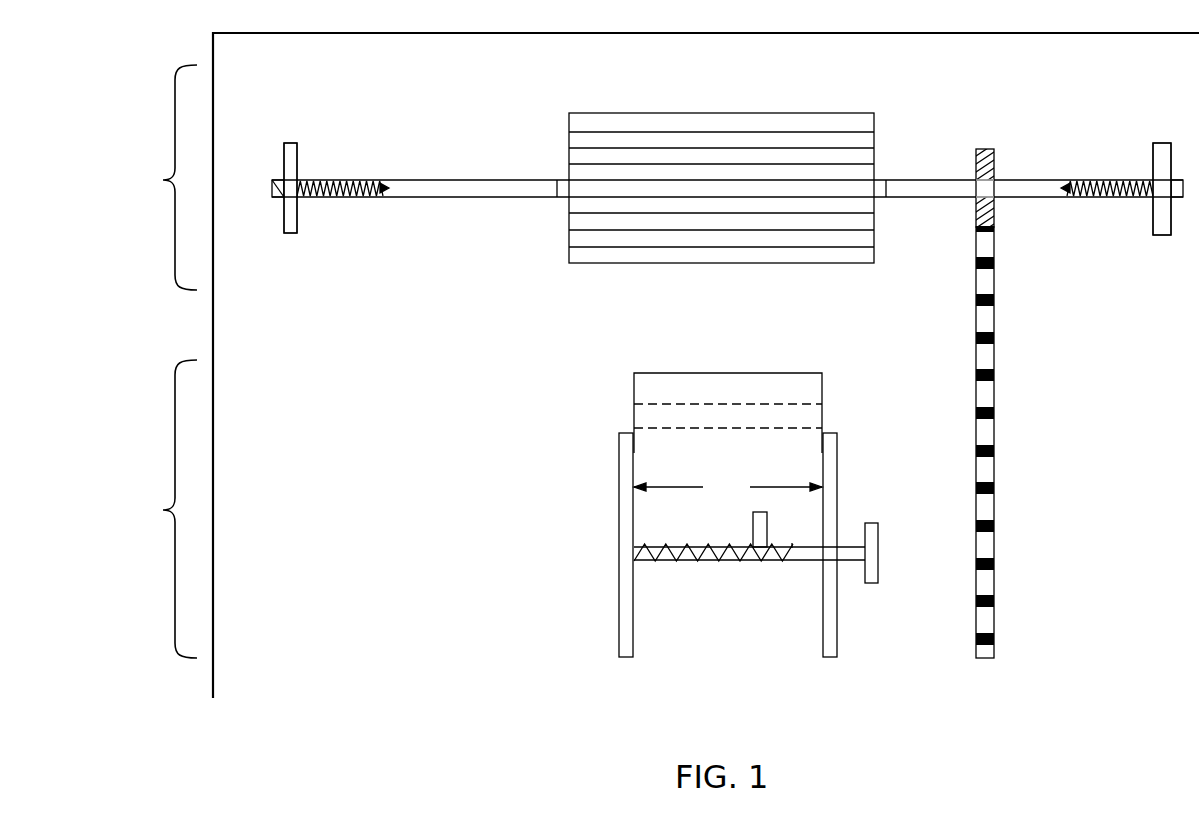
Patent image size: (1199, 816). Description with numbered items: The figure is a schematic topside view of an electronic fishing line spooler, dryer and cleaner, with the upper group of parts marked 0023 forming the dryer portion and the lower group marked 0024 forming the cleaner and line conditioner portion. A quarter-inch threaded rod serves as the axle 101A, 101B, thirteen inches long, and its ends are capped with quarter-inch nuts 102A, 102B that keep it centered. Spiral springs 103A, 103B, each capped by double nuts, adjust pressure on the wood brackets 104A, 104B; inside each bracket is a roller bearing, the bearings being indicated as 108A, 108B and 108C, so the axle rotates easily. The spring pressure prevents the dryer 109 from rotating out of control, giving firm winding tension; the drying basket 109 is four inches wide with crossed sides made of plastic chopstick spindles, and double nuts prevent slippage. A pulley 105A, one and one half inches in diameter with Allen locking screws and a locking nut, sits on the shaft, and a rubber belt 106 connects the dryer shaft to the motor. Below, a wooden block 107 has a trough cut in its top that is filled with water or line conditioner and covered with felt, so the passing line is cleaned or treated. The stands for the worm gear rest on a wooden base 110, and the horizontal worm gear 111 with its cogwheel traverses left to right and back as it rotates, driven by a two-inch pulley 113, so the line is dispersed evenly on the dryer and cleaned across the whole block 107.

The first subsystem paragraph reference 0023 is at (163, 180).
The second subsystem paragraph reference 0024 is at (163, 510).
The axle 101A is at (467, 173).
The axle 101B is at (1070, 177).
The nut 102A is at (286, 171).
The nut 102B is at (1163, 172).
The spiral spring 103A is at (373, 202).
The spiral spring 103B is at (1100, 200).
The bracket 104A is at (297, 240).
The bracket 104B is at (1163, 237).
The pulley 105A is at (977, 217).
The rubber belt 106 is at (995, 335).
The wooden block 107 is at (827, 412).
The roller bearing 108A is at (300, 177).
The roller bearing 108B is at (1152, 175).
The roller bearing 108C is at (840, 543).
The drying basket 109 is at (877, 120).
The base 110 is at (728, 487).
The horizontal worm gear 111 is at (697, 563).
The pulley 113 is at (907, 553).